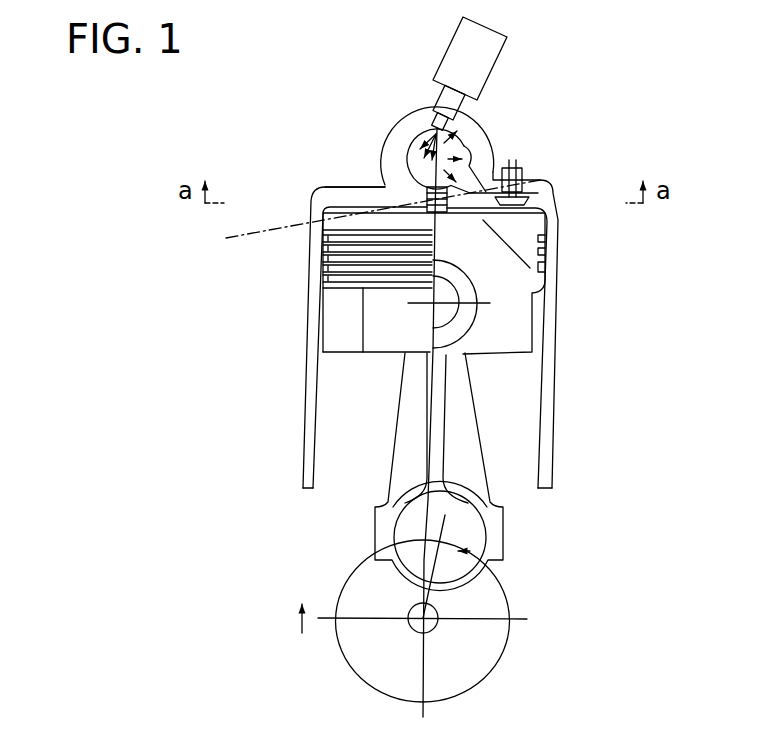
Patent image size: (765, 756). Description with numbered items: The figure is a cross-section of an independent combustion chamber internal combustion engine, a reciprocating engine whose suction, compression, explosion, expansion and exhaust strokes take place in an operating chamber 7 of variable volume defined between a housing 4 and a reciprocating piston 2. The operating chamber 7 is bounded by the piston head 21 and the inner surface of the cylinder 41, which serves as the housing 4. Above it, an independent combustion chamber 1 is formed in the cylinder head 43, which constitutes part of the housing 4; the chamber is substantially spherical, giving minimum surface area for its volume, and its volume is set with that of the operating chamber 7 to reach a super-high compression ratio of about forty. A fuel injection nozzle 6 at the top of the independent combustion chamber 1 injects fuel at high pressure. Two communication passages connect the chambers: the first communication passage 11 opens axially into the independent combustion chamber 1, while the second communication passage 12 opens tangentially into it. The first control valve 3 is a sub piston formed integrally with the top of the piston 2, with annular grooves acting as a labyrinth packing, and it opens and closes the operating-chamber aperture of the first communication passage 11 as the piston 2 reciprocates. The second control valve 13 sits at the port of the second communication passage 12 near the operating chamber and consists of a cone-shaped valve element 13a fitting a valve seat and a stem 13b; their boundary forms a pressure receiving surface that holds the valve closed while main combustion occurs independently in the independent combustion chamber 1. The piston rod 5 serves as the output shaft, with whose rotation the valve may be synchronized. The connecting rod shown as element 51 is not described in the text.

The independent combustion chamber 1 is at (402, 141).
The first communication passage 11 is at (426, 187).
The second communication passage 12 is at (513, 176).
The second control valve 13 is at (580, 208).
The valve element 13a is at (516, 202).
The stem 13b is at (541, 172).
The piston 2 is at (515, 229).
The piston head 21 is at (484, 222).
The first control valve 3 is at (528, 183).
The housing 4 is at (306, 279).
The cylinder 41 is at (553, 318).
The cylinder head 43 is at (343, 183).
The piston rod 5 is at (407, 607).
The connecting rod 51 is at (481, 428).
The fuel injection nozzle 6 is at (494, 74).
The operating chamber 7 is at (371, 217).